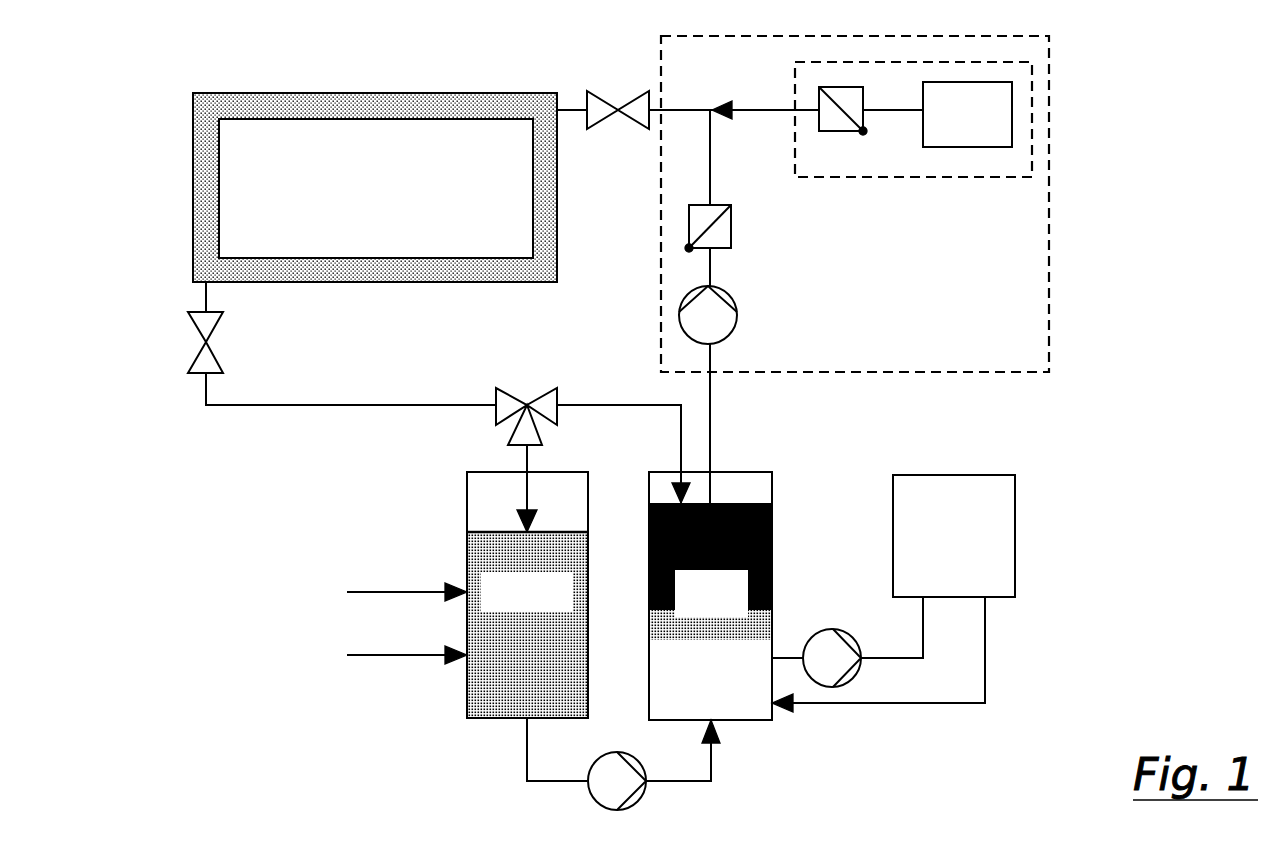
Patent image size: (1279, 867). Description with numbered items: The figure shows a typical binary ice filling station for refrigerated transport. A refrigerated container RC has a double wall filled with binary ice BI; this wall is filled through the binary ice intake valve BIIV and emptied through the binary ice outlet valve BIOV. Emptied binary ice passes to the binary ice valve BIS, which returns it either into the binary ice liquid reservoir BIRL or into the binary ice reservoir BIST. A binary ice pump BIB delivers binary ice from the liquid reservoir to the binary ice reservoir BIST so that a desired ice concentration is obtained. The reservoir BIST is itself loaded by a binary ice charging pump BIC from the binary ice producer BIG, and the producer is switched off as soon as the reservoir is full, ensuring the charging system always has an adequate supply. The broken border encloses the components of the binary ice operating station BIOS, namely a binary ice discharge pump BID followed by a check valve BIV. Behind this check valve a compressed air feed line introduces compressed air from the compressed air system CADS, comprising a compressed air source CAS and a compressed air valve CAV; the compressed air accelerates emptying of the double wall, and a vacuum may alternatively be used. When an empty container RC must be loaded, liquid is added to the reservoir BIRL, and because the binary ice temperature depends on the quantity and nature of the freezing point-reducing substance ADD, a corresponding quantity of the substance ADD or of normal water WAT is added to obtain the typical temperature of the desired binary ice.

The refrigerated container RC is at (375, 187).
The binary ice BI is at (493, 110).
The binary ice intake valve BIIV is at (618, 88).
The binary ice operating station BIOS is at (855, 204).
The compressed air system CADS is at (913, 141).
The compressed air valve CAV is at (840, 129).
The compressed air source CAS is at (967, 114).
The check valve BIV is at (740, 228).
The binary ice discharge pump BID is at (740, 315).
The binary ice outlet valve BIOV is at (242, 342).
The binary ice valve BIS is at (526, 398).
The binary ice liquid reservoir BIRL is at (527, 595).
The binary ice reservoir BIST is at (710, 596).
The binary ice charging pump BIC is at (832, 632).
The binary ice producer BIG is at (954, 536).
The binary ice pump BIB is at (617, 808).
The water WAT is at (360, 591).
The freezing point-reducing substance ADD is at (360, 657).